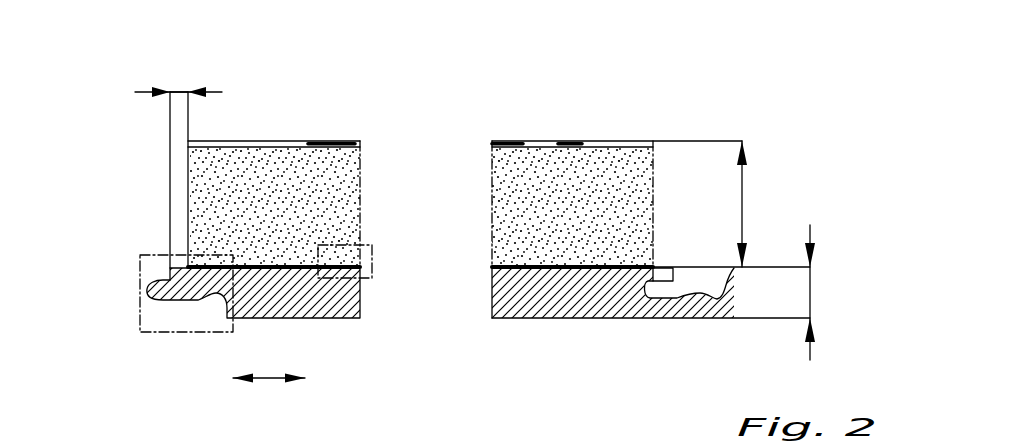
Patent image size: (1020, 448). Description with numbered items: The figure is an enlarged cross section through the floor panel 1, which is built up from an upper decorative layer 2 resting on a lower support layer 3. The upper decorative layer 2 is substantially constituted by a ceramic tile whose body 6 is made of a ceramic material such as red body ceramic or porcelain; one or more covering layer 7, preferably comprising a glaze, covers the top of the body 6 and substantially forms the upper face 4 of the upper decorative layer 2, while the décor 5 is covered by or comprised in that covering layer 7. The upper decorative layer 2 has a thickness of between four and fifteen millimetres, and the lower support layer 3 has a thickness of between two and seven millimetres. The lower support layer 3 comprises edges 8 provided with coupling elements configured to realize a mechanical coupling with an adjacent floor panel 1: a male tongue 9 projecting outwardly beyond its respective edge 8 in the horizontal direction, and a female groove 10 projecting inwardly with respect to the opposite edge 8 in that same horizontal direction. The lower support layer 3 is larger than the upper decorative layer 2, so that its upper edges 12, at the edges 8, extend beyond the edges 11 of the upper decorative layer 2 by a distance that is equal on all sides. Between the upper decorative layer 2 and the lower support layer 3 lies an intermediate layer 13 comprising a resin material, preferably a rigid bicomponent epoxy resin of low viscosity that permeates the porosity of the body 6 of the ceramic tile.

The floor panel 1 is at (248, 114).
The upper decorative layer 2 is at (190, 200).
The lower support layer 3 is at (572, 319).
The upper face 4 is at (355, 141).
The décor 5 is at (320, 141).
The body 6 is at (198, 232).
The covering layer 7 is at (492, 143).
The edges 8 is at (142, 314).
The tongue 9 is at (196, 296).
The groove 10 is at (700, 288).
The edges of the upper decorative layer 11 is at (190, 183).
The upper edges 12 is at (170, 268).
The intermediate layer 13 is at (492, 268).